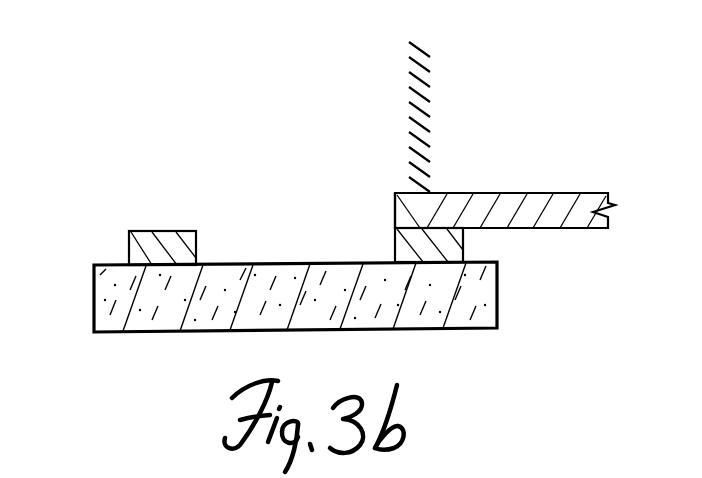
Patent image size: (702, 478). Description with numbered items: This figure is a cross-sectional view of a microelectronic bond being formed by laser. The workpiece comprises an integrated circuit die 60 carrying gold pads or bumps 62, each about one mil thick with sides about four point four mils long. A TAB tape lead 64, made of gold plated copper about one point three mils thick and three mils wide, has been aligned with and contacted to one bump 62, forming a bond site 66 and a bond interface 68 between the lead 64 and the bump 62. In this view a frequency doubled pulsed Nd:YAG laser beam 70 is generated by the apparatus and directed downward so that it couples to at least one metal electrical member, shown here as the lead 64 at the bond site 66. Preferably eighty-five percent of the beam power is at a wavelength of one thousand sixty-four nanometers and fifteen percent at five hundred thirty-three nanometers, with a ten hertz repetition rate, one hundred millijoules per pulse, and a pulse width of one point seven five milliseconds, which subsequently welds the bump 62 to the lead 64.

The integrated circuit die 60 is at (497, 297).
The gold pads or bumps 62 is at (129, 232).
The TAB tape lead 64 is at (540, 193).
The bond site 66 is at (395, 201).
The bond interface 68 is at (395, 228).
The frequency doubled pulsed Nd:YAG laser beam 70 is at (428, 104).